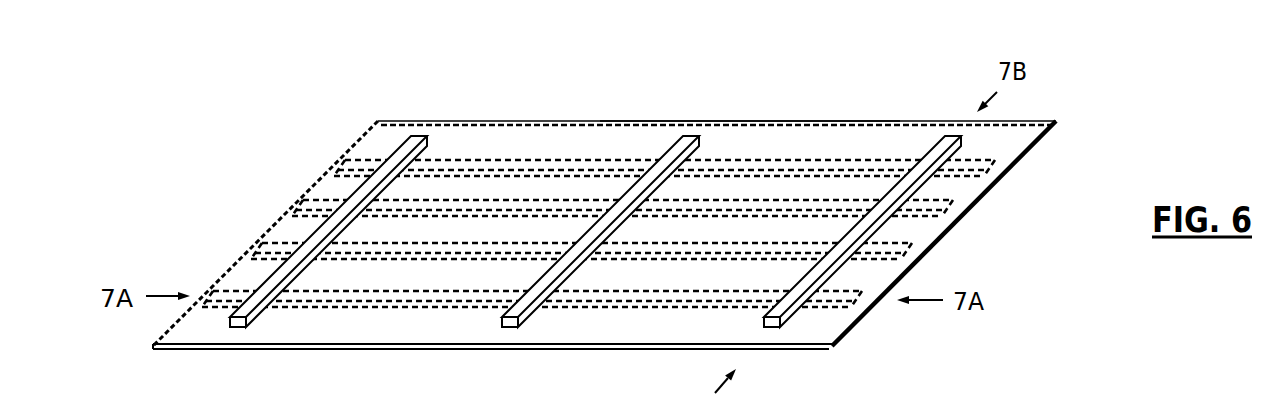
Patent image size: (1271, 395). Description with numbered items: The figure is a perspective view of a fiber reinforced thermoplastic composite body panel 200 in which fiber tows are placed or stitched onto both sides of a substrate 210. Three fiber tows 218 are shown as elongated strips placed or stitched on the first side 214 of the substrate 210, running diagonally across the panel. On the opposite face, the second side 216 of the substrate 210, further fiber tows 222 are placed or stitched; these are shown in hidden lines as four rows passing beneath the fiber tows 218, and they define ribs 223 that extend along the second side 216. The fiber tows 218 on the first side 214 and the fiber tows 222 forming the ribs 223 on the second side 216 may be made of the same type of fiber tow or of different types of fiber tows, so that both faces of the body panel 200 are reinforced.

The fiber reinforced thermoplastic composite body panel 200 is at (606, 218).
The substrate 210 is at (557, 121).
The first side 214 is at (741, 146).
The second side 216 is at (926, 238).
The fiber tows 218 is at (351, 194).
The fiber tows 222 is at (531, 158).
The ribs 223 is at (573, 177).